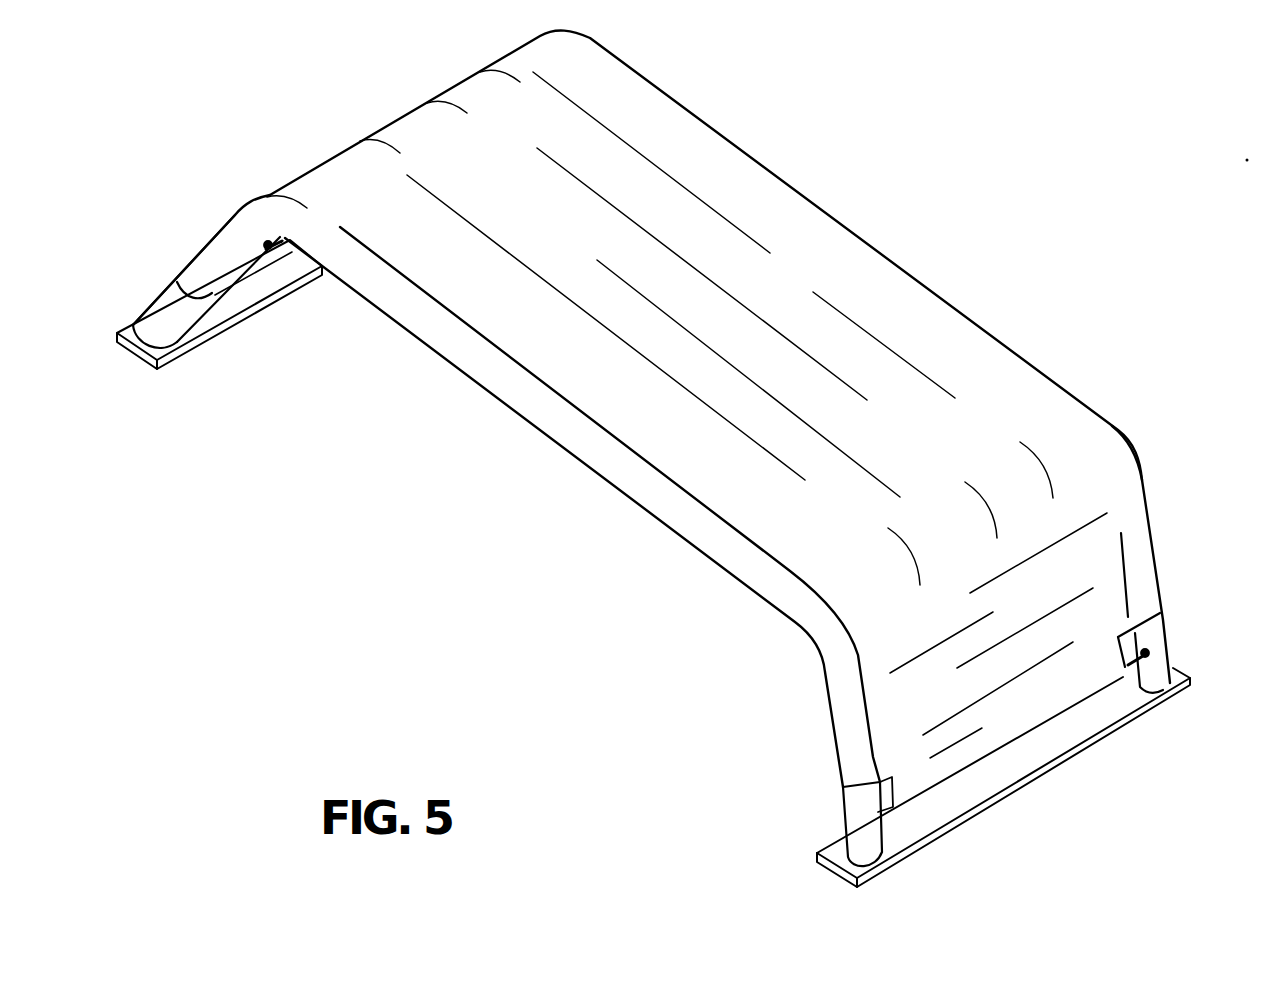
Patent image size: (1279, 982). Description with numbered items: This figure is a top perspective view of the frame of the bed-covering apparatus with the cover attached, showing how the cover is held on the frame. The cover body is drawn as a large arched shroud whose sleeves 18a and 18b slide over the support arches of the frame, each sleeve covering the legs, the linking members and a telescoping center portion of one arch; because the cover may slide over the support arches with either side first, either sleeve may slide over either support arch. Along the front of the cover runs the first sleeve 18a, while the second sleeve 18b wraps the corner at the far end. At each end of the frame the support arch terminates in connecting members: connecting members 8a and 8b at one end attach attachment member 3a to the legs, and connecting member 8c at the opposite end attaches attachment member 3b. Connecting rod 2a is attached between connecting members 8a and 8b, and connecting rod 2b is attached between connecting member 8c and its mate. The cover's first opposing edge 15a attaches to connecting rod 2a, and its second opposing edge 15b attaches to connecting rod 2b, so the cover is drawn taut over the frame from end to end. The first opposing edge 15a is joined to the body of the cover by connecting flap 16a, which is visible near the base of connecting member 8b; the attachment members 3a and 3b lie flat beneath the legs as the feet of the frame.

The connecting rod 2a is at (1147, 662).
The connecting rod 2b is at (228, 290).
The attachment member 3a is at (1117, 735).
The attachment member 3b is at (187, 353).
The connecting member 8a is at (1167, 648).
The connecting member 8b is at (842, 813).
The connecting member 8c is at (157, 296).
The first opposing edge 15a is at (1053, 718).
The second opposing edge 15b is at (288, 256).
The connecting flap 16a is at (908, 785).
The sleeve 18a is at (602, 448).
The sleeve 18b is at (1133, 457).